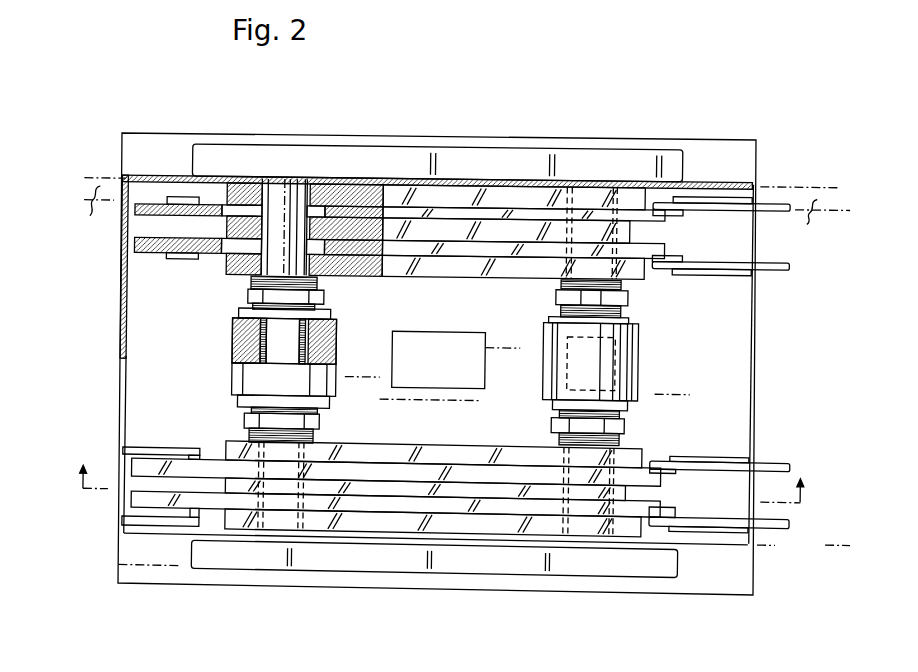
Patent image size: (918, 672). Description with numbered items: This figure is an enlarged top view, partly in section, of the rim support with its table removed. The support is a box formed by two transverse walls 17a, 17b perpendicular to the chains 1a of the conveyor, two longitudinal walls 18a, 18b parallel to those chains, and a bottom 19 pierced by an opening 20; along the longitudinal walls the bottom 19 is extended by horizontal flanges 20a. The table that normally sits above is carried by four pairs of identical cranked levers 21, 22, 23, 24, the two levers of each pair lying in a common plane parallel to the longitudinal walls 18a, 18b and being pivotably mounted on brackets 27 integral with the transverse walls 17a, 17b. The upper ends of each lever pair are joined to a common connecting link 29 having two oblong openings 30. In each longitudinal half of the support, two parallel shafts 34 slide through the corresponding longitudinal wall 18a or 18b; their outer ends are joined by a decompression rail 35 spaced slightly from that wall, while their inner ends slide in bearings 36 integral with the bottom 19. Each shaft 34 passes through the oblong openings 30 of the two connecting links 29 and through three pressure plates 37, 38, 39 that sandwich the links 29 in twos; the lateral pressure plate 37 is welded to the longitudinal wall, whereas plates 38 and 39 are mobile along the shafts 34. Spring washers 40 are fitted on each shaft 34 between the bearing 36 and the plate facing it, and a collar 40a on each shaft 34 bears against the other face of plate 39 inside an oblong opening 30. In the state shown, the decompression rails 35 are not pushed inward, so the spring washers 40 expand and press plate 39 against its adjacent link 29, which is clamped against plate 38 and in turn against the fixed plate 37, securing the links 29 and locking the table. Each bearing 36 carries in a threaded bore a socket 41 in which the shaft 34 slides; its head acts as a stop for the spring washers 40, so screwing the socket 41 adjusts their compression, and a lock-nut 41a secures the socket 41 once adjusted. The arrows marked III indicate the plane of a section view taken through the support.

The chains 1a is at (464, 343).
The transverse wall 17a is at (121, 377).
The transverse wall 17b is at (752, 343).
The longitudinal wall 18a is at (149, 178).
The longitudinal wall 18b is at (155, 540).
The bottom 19 is at (472, 434).
The opening 20 is at (455, 374).
The horizontal flanges 20a is at (627, 139).
The cranked lever 21 is at (158, 202).
The cranked lever 22 is at (172, 263).
The cranked lever 23 is at (209, 466).
The cranked lever 24 is at (784, 521).
The brackets 27 is at (712, 193).
The connecting link 29 is at (478, 250).
The oblong openings 30 is at (310, 208).
The shafts 34 is at (326, 332).
The decompression rail 35 is at (497, 159).
The bearing 36 is at (237, 378).
The lateral pressure plate 37 is at (391, 197).
The pressure plate 38 is at (428, 230).
The pressure plate 39 is at (409, 267).
The spring washers 40 is at (247, 290).
The collar 40a is at (243, 217).
The socket 41 is at (319, 299).
The lock-nut 41a is at (242, 318).
The section line III- III is at (449, 469).